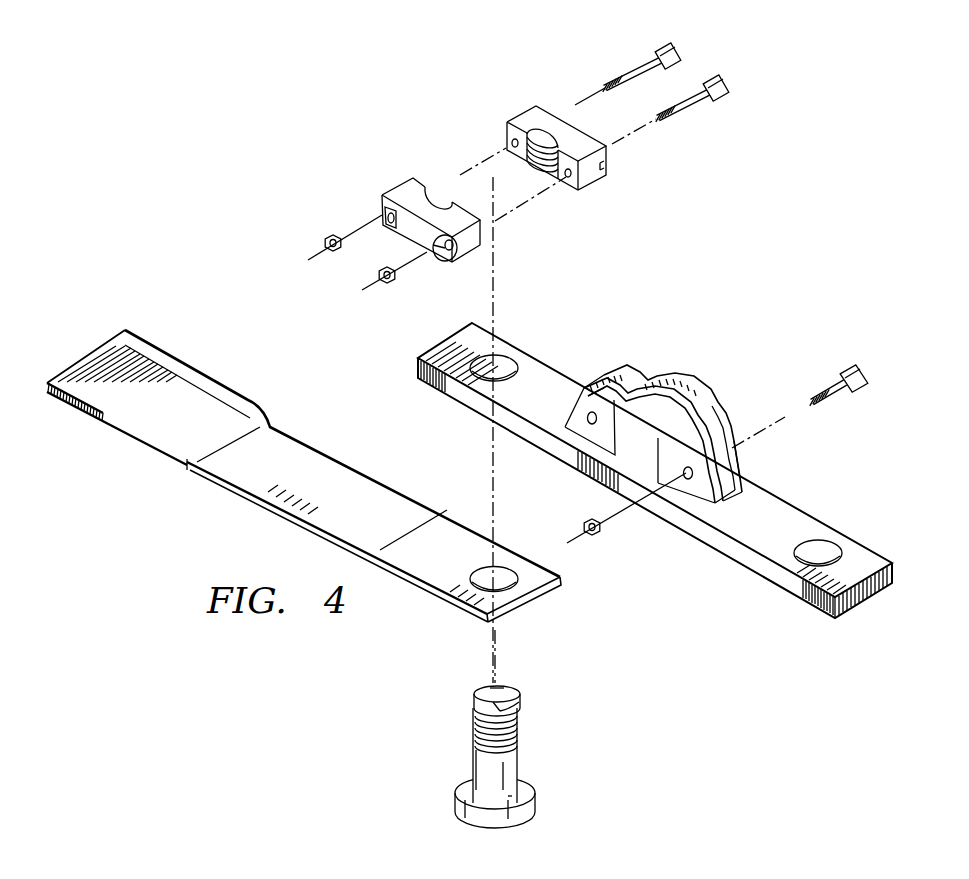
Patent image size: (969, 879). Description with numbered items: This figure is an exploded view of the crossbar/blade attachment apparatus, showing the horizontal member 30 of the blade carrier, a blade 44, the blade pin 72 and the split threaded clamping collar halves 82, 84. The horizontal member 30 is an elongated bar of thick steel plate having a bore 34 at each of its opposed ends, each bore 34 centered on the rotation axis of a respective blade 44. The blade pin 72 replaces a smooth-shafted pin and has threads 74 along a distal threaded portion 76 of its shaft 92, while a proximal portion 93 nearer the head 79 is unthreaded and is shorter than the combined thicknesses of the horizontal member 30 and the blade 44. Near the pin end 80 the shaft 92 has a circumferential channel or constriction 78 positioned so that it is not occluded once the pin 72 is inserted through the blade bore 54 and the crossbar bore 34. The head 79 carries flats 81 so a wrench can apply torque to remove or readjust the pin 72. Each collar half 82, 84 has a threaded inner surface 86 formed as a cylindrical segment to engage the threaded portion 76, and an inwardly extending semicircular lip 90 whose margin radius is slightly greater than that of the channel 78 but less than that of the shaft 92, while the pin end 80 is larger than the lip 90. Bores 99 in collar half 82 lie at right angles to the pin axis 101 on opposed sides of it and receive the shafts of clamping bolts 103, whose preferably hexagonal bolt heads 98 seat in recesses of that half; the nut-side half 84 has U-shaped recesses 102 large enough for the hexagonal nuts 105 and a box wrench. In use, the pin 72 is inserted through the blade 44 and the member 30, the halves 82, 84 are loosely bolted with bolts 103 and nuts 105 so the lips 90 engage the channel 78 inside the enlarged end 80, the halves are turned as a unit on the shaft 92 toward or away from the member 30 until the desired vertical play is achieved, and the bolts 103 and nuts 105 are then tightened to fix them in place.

The horizontal member 30 is at (594, 310).
The bore 34 is at (505, 356).
The blade 44 is at (408, 500).
The blade bore 54 is at (500, 570).
The blade pin 72 is at (448, 743).
The threads 74 is at (518, 730).
The threaded portion 76 is at (472, 737).
The circumferential channel 78 is at (475, 712).
The head 79 is at (465, 817).
The pin end 80 is at (503, 687).
The flats 81 is at (457, 777).
The collar half 82 is at (523, 111).
The collar half 84 is at (400, 187).
The threaded inner surface 86 is at (546, 158).
The lip 90 is at (546, 130).
The shaft 92 is at (472, 760).
The proximal portion 93 is at (508, 783).
The bolt head 98 is at (666, 50).
The bore 99 is at (511, 141).
The pin axis 101 is at (497, 250).
The U-shaped recess 102 is at (436, 262).
The clamping bolt 103 is at (633, 62).
The nut 105 is at (331, 234).